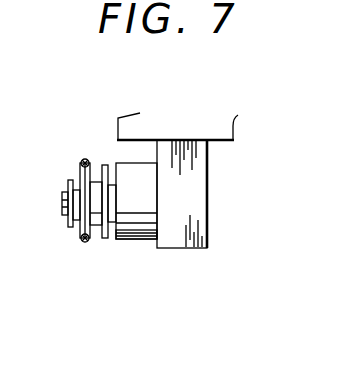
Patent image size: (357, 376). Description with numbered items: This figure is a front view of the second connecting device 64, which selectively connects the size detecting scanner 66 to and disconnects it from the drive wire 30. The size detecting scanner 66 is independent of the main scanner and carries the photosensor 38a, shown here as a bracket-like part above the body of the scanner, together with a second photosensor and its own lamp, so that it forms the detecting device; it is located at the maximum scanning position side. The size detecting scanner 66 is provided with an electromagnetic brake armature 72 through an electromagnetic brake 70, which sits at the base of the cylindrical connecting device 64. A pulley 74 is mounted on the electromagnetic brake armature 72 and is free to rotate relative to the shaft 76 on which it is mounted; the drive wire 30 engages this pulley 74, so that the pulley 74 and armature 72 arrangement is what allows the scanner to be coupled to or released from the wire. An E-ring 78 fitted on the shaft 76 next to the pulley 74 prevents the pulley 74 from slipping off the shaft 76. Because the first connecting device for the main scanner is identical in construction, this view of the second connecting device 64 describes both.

The drive wire 30 is at (86, 160).
The photosensor 38a is at (217, 137).
The second connecting device 64 is at (125, 241).
The size detecting scanner 66 is at (200, 215).
The electromagnetic brake 70 is at (140, 232).
The electromagnetic brake armature 72 is at (105, 240).
The pulley 74 is at (80, 169).
The shaft 76 is at (61, 205).
The E-ring 78 is at (67, 190).